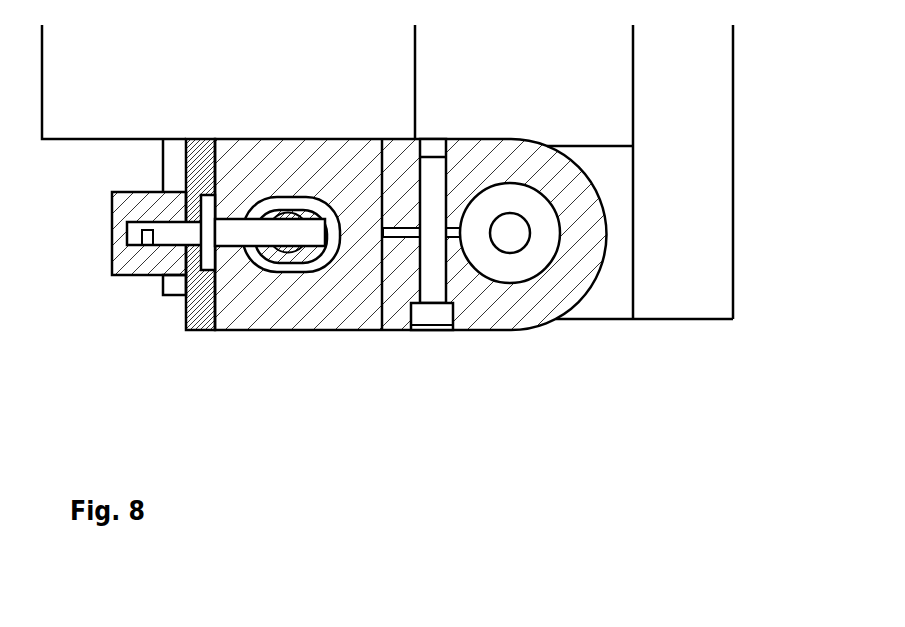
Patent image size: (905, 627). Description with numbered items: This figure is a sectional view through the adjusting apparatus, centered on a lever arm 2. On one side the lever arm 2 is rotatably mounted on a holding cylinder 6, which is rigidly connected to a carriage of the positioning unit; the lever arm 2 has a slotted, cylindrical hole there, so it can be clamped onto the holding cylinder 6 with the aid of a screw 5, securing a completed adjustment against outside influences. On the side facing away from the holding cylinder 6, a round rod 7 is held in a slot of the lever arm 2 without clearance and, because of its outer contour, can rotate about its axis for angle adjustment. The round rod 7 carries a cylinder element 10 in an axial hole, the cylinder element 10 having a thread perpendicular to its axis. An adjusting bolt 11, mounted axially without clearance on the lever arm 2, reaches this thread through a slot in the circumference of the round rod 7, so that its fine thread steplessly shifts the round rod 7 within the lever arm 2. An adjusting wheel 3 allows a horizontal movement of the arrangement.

The lever arm 2 is at (565, 287).
The adjusting wheel 3 is at (168, 257).
The screw 5 is at (435, 312).
The holding cylinder 6 is at (503, 272).
The round rod 7 is at (282, 258).
The cylinder element 10 is at (310, 265).
The adjusting bolt 11 is at (245, 237).